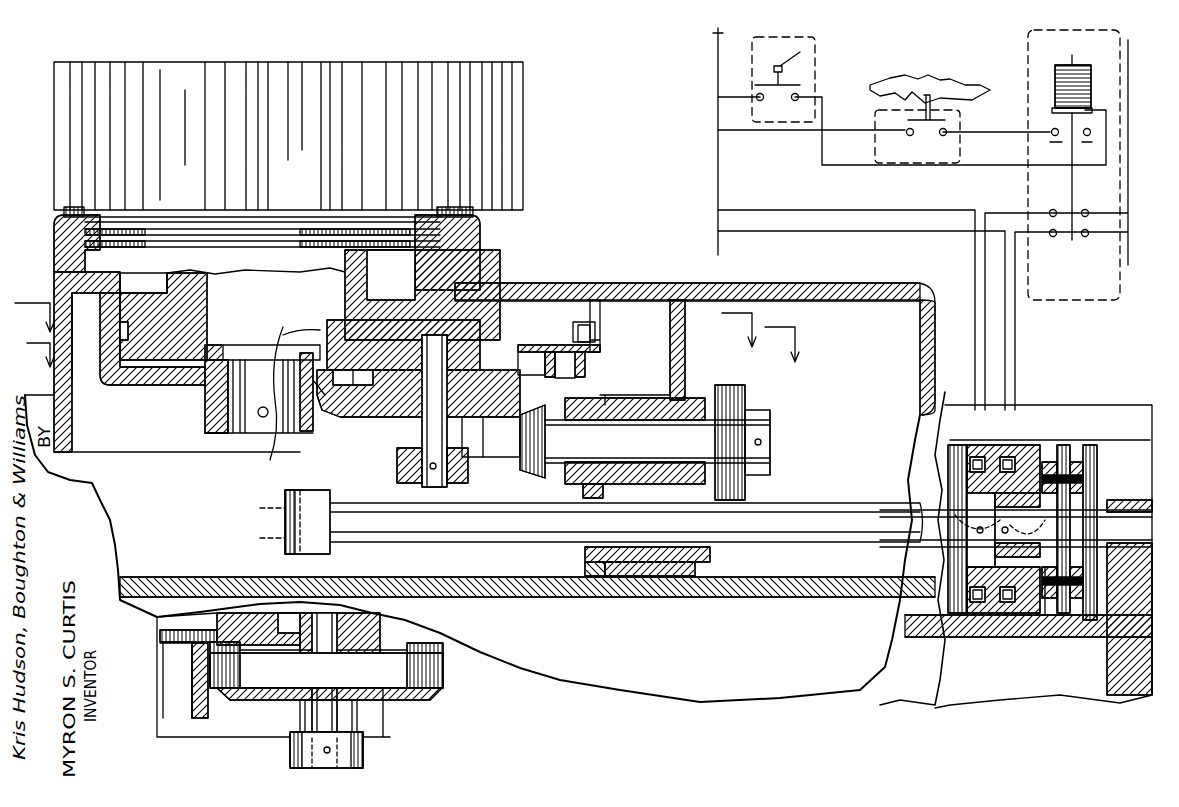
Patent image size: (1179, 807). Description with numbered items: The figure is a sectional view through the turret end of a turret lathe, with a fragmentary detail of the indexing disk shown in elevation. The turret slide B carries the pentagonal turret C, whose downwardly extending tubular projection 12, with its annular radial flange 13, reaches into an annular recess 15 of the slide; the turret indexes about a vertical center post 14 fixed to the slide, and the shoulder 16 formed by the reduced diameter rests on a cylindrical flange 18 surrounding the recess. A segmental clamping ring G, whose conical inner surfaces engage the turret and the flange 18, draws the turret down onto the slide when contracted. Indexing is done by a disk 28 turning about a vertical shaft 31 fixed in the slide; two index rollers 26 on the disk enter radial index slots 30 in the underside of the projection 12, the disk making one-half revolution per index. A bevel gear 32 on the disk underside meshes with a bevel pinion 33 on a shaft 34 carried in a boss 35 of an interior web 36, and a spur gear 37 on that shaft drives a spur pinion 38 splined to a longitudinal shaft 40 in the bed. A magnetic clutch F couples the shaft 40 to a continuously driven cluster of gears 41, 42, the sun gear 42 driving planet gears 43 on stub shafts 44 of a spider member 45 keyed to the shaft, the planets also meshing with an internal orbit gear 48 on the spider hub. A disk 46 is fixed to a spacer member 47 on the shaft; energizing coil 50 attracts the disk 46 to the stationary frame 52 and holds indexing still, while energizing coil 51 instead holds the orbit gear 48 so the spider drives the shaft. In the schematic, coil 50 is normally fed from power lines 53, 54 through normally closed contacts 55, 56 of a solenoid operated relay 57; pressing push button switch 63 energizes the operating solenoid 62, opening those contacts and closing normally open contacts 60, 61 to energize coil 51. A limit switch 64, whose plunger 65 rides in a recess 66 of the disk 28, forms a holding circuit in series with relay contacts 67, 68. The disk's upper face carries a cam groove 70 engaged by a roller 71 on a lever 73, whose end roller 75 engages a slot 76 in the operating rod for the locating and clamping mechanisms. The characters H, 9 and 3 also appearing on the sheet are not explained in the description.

In FIG. 2, the turret C is at (523, 80).
In FIG. 2, the segmental clamping ring G is at (62, 240).
In FIG. 2, the turret slide B is at (880, 285).
In FIG. 2, the magnetic clutch F is at (975, 612).
In FIG. 2, the break line H is at (548, 655).
In FIG. 2, the section line 9 is at (384, 322).
In FIG. 2, the section line 3 is at (409, 345).
In FIG. 2, the tubular-like projection 12 is at (198, 290).
In FIG. 2, the annular radial flange 13 is at (372, 318).
In FIG. 2A, the annular radial flange 13 is at (262, 668).
In FIG. 2, the vertical center post 14 is at (262, 427).
In FIG. 2A, the vertical center post 14 is at (205, 738).
In FIG. 2, the annular recess 15 is at (445, 262).
In FIG. 2, the shoulder 16 is at (135, 245).
In FIG. 2A, the shoulder 16 is at (380, 632).
In FIG. 2, the cylindrical flange 18 is at (412, 258).
In FIG. 2A, the index rollers 26 is at (310, 668).
In FIG. 2, the disk 28 is at (508, 414).
In FIG. 2A, the disk 28 is at (300, 703).
In FIG. 2, the index slots 30 is at (390, 362).
In FIG. 2, the vertical shaft 31 is at (420, 488).
In FIG. 2A, the vertical shaft 31 is at (288, 757).
In FIG. 2, the bevel gear 32 is at (325, 410).
In FIG. 2A, the bevel gear 32 is at (430, 702).
In FIG. 2, the bevel pinion 33 is at (530, 470).
In FIG. 2, the shaft 34 is at (665, 440).
In FIG. 2, the boss 35 is at (590, 400).
In FIG. 2, the interior web 36 is at (686, 350).
In FIG. 2, the spur gear 37 is at (750, 403).
In FIG. 2, the spur pinion 38 is at (717, 552).
In FIG. 2, the splined shaft 40 is at (780, 515).
In FIG. 2, the gear 41 is at (1097, 490).
In FIG. 2, the sun gear 42 is at (1035, 620).
In FIG. 2, the planet gears 43 is at (1068, 462).
In FIG. 2, the stub shafts 44 is at (1083, 470).
In FIG. 2, the spider member 45 is at (1016, 521).
In FIG. 2, the disk 46 is at (950, 560).
In FIG. 2, the spacer member 47 is at (975, 545).
In FIG. 2, the internal gear 48 is at (1062, 460).
In FIG. 2, the coil 50 is at (975, 458).
In FIG. 2, the coil 51 is at (1005, 458).
In FIG. 2, the stationary frame 52 is at (997, 612).
In FIG. 2, the power line 53 is at (718, 150).
In FIG. 2, the power line 54 is at (1128, 190).
In FIG. 2, the normally closed contact 55 is at (1048, 210).
In FIG. 2, the normally closed contact 56 is at (1088, 205).
In FIG. 2, the solenoid operated relay 57 is at (1095, 82).
In FIG. 2, the normally open contact 60 is at (1052, 237).
In FIG. 2, the normally open contact 61 is at (1085, 237).
In FIG. 2, the operating solenoid 62 is at (1055, 95).
In FIG. 2, the push button switch 63 is at (784, 79).
In FIG. 2, the limit switch 64 is at (908, 135).
In FIG. 2, the plunger 65 is at (975, 63).
In FIG. 2, the slot or recess 66 is at (922, 78).
In FIG. 2, the normally open contact 67 is at (1058, 128).
In FIG. 2, the normally open contact 68 is at (1090, 132).
In FIG. 2, the cam groove 70 is at (343, 378).
In FIG. 2, the roller 71 is at (558, 375).
In FIG. 2, the lever 73 is at (505, 345).
In FIG. 2, the roller 75 is at (605, 328).
In FIG. 2, the slot 76 is at (580, 320).